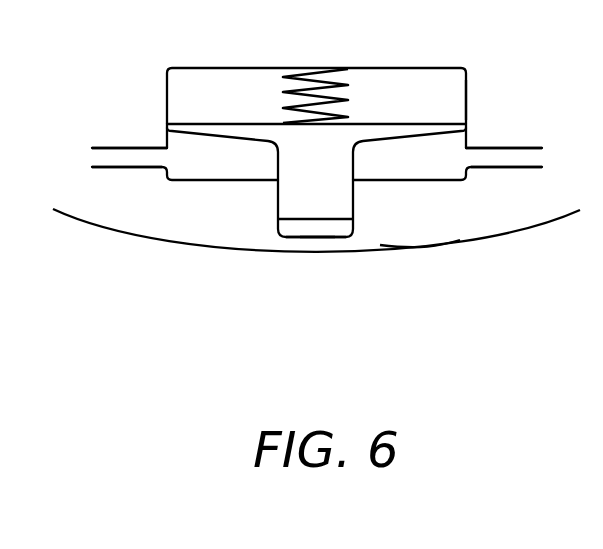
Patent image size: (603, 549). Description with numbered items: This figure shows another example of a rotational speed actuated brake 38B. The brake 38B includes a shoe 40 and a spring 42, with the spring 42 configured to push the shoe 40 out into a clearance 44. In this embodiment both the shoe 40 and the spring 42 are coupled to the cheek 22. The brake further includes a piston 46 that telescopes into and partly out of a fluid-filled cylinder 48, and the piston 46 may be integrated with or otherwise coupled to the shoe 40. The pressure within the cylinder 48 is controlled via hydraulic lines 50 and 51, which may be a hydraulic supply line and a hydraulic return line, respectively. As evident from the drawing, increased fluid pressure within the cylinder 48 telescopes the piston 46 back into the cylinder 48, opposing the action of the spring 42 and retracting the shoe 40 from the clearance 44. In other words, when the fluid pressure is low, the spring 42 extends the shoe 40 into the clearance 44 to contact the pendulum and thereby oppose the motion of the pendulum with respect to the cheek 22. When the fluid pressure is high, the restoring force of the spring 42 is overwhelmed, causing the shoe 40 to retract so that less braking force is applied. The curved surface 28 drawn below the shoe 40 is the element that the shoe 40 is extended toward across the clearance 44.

The cheek 22 is at (143, 117).
The spring 42 is at (348, 100).
The fluid-filled cylinder 48 is at (466, 102).
The hydraulic line 51 is at (87, 168).
The hydraulic line 50 is at (572, 166).
The piston 46 is at (329, 191).
The clearance 44 is at (287, 245).
The shoe 40 is at (323, 248).
The curved surface 28 is at (584, 248).
The rotational speed actuated brake 38B is at (409, 208).